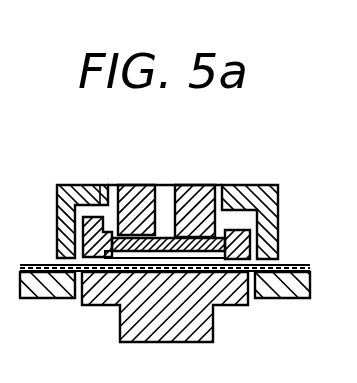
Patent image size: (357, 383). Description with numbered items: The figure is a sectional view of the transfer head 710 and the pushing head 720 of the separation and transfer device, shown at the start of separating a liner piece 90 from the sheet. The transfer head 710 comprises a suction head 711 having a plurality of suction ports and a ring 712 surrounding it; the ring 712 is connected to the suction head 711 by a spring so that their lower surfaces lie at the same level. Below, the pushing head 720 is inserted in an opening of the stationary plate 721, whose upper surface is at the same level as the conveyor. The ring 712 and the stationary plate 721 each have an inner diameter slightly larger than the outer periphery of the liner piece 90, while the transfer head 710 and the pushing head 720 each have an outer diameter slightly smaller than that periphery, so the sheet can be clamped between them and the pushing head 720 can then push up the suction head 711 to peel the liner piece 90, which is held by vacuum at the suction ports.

The transfer head 710 is at (171, 187).
The suction head 711 is at (192, 185).
The ring 712 is at (279, 186).
The liner piece 90 is at (260, 247).
The pushing head 720 is at (213, 336).
The stationary plate 721 is at (286, 299).